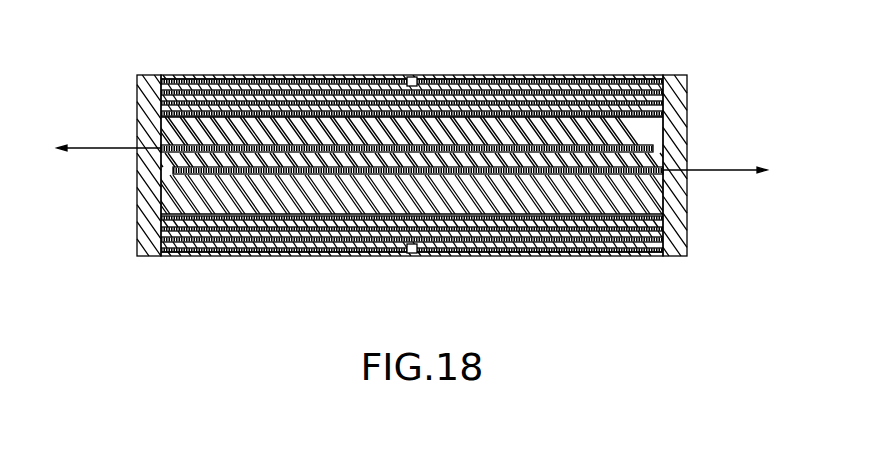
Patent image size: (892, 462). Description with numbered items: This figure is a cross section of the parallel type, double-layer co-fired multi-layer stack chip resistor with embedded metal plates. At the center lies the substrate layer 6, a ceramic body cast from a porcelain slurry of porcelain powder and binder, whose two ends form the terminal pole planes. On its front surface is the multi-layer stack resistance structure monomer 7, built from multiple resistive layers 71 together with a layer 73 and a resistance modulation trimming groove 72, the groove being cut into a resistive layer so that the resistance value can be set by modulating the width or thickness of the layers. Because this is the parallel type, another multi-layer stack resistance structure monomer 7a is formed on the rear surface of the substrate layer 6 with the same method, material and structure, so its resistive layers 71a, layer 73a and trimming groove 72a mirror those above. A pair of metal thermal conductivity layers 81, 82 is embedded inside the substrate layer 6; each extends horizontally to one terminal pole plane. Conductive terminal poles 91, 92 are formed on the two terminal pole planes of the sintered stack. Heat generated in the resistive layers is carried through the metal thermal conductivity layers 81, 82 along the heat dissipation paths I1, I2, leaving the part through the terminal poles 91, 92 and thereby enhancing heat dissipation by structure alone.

The substrate layer 6 is at (660, 136).
The multi-layer stack resistance structure monomer 7 is at (630, 75).
The multi-layer stack resistance structure monomer 7a is at (630, 258).
The resistive layer 71 is at (578, 76).
The lower layer 71a is at (574, 258).
The resistance modulation trimming groove 72 is at (410, 76).
The lower electrode terminal 72a is at (410, 258).
The upper layer 73 is at (490, 74).
The lower layer 73a is at (483, 258).
The metal thermal conductivity layer 81 is at (173, 172).
The metal thermal conductivity layer 82 is at (663, 159).
The terminal pole 91 is at (143, 74).
The terminal pole 92 is at (668, 75).
The heat dissipation I1 is at (102, 147).
The heat dissipation I2 is at (722, 172).